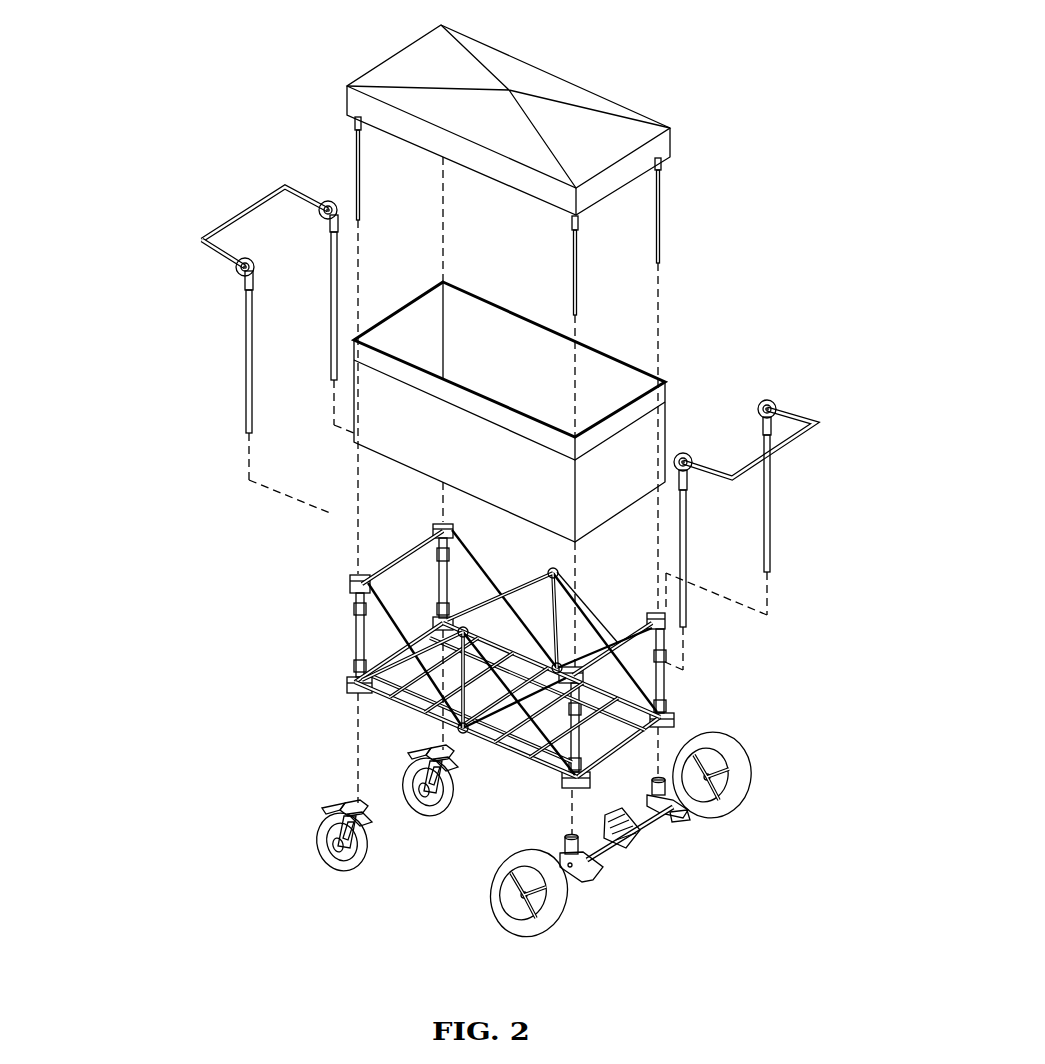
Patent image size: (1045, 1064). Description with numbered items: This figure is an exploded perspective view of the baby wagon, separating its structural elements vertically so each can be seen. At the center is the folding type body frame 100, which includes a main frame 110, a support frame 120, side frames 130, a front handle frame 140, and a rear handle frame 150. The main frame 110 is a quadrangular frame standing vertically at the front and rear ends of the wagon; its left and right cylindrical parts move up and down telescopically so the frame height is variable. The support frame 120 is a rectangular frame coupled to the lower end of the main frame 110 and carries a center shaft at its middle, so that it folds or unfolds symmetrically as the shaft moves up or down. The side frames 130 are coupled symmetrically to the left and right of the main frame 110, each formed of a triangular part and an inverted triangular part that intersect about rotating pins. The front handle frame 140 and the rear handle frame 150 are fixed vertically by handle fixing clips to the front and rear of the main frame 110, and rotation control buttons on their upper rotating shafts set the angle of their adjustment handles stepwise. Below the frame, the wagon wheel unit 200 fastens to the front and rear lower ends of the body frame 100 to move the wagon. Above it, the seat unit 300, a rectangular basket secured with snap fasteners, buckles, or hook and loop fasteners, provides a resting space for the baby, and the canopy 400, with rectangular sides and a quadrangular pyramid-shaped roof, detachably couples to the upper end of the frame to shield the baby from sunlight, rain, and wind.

The folding type body frame 100 is at (489, 656).
The main frame 110 is at (356, 637).
The support frame 120 is at (390, 694).
The side frames 130 is at (351, 592).
The front handle frame 140 is at (248, 367).
The rear handle frame 150 is at (767, 507).
The wagon wheel unit 200 is at (433, 813).
The seat unit 300 is at (600, 387).
The canopy 400 is at (563, 93).